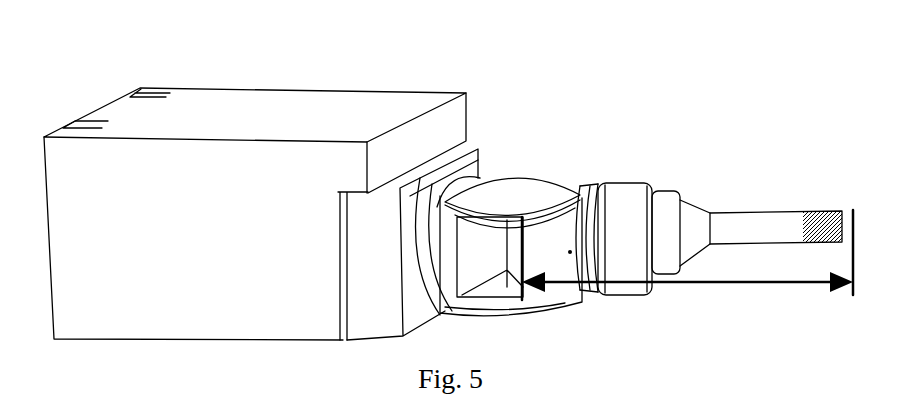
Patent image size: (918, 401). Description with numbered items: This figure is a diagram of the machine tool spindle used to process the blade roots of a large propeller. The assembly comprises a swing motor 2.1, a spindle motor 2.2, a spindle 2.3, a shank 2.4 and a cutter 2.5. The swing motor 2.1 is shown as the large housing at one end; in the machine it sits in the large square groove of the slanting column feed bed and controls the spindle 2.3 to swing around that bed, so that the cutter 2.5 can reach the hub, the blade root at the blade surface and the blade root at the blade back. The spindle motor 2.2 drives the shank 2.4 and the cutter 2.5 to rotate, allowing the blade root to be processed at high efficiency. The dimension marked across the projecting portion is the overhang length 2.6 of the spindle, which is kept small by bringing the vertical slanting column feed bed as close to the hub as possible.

The swing motor 2.1 is at (217, 108).
The spindle motor 2.2 is at (553, 240).
The spindle 2.3 is at (628, 240).
The shank 2.4 is at (692, 240).
The cutter 2.5 is at (753, 225).
The overhang length of spindle 2.6 is at (752, 275).